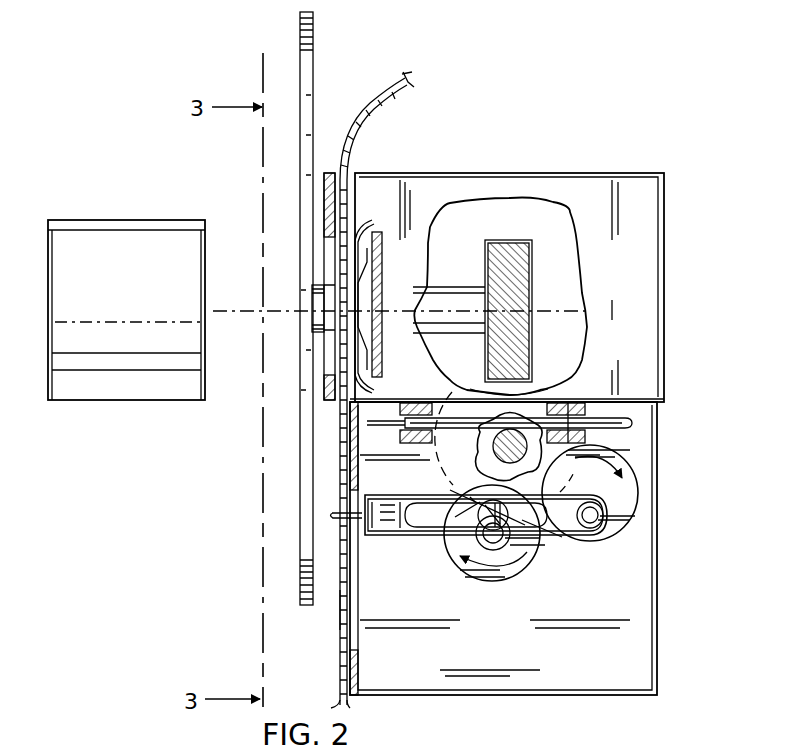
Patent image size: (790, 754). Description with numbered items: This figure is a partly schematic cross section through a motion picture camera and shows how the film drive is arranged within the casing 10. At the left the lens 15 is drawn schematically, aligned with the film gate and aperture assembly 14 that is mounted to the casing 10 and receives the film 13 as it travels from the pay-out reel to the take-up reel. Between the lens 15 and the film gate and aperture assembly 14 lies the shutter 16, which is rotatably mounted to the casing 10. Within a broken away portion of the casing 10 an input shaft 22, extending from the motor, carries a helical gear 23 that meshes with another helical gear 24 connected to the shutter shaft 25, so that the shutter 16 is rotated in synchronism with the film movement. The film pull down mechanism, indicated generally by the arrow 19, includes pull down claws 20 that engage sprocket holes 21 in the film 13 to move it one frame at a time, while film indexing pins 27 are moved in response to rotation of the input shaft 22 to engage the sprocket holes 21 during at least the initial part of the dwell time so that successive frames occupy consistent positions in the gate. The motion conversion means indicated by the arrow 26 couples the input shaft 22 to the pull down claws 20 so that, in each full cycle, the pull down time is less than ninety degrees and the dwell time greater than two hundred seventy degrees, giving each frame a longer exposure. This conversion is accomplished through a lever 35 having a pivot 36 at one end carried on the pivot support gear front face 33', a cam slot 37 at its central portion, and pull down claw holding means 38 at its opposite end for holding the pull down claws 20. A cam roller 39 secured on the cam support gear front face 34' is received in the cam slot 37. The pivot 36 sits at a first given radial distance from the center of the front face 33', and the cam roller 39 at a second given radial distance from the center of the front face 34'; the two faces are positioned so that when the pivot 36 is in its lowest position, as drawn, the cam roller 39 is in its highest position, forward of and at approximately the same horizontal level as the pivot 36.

The casing 10 is at (548, 173).
The film 13 is at (355, 110).
The film gate and aperture assembly 14 is at (352, 272).
The lens 15 is at (140, 220).
The shutter 16 is at (314, 48).
The film pull down mechanism 19 is at (669, 418).
The pull down claws 20 is at (333, 515).
The sprocket holes 21 is at (340, 627).
The input shaft 22 is at (497, 462).
The helical gear 23 is at (472, 390).
The helical gear 24 is at (527, 241).
The shutter shaft 25 is at (446, 288).
The motion conversion means 26 is at (567, 585).
The film indexing pins 27 is at (380, 424).
The pivot support gear front face 33' is at (593, 508).
The cam support gear front face 34' is at (494, 553).
The lever 35 is at (392, 522).
The pivot 36 is at (591, 519).
The cam slot 37 is at (432, 521).
The pull down claw holding means 38 is at (378, 495).
The cam roller 39 is at (512, 515).